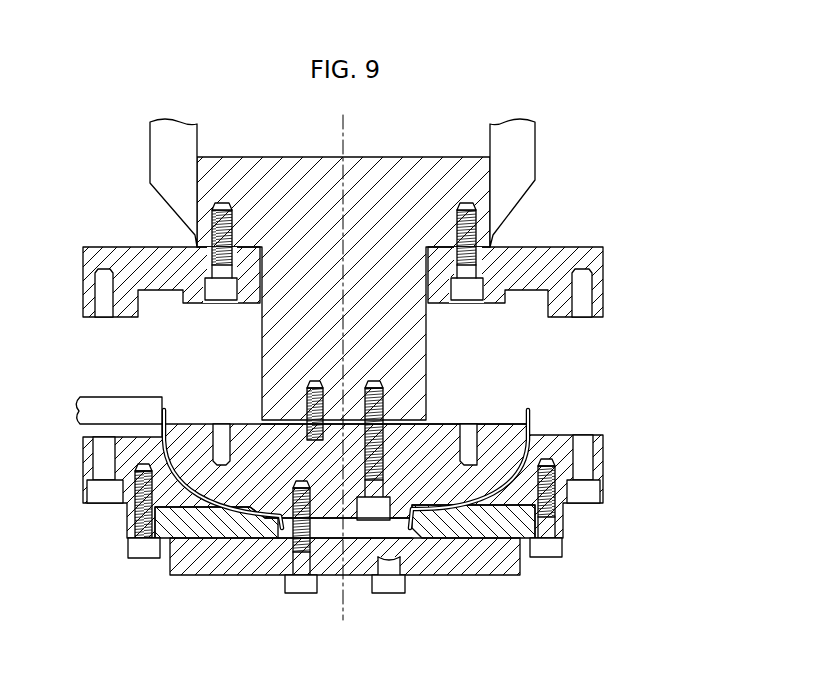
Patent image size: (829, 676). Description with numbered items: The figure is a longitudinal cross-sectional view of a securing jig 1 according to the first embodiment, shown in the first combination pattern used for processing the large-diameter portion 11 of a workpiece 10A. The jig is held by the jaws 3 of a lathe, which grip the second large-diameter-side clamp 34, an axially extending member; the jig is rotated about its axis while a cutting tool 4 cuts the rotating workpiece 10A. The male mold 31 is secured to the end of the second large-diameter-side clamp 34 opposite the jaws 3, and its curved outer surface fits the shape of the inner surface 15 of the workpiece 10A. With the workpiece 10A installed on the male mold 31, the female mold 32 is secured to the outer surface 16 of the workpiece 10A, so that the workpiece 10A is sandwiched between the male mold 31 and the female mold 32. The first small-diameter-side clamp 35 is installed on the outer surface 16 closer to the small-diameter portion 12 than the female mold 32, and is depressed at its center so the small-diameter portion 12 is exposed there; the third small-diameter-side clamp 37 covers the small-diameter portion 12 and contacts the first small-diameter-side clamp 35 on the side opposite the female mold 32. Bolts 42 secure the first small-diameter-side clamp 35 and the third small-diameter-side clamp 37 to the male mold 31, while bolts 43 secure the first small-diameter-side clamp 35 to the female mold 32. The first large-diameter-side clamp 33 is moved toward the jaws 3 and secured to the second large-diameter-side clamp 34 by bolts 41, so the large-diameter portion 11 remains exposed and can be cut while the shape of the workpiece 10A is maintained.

The securing jig 1 is at (385, 378).
The jaws 3 is at (522, 143).
The cutting tool 4 is at (97, 397).
The workpiece 10A is at (183, 487).
The large-diameter portion 11 is at (378, 431).
The small-diameter portion 12 is at (416, 536).
The inner surface 15 is at (508, 465).
The outer surface 16 is at (514, 478).
The male mold 31 is at (443, 433).
The female mold 32 is at (605, 447).
The first large-diameter-side clamp 33 is at (605, 282).
The second large-diameter-side clamp 34 is at (398, 157).
The first small-diameter-side clamp 35 is at (465, 542).
The third small-diameter-side clamp 37 is at (250, 560).
The bolts 41 is at (471, 296).
The bolts 42 is at (308, 595).
The bolts 43 is at (548, 560).